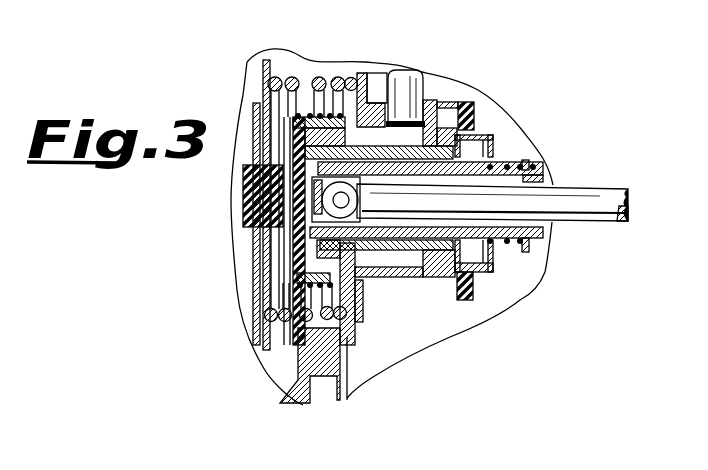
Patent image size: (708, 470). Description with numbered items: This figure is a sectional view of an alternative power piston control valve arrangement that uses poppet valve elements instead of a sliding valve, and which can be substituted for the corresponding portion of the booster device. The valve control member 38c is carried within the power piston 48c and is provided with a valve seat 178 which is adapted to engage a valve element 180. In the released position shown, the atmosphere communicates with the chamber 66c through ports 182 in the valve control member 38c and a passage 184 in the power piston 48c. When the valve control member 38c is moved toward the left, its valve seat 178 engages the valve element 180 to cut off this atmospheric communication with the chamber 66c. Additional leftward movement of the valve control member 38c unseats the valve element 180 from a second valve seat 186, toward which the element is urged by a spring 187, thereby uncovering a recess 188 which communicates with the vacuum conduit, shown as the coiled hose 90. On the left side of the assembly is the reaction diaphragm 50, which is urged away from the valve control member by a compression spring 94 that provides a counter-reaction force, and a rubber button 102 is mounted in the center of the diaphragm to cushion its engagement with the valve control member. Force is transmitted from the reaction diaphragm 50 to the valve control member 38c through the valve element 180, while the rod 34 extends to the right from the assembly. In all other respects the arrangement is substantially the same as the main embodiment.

The operating rod 34 is at (587, 198).
The valve control member 38c is at (440, 280).
The power piston 48c is at (313, 383).
The reaction diaphragm 50 is at (256, 281).
The chamber 66c is at (290, 327).
The coiled hose 90 is at (405, 95).
The compression spring 94 is at (347, 347).
The rubber button 102 is at (262, 195).
The valve seat 178 is at (365, 298).
The valve element 180 is at (283, 130).
The ports 182 is at (287, 238).
The passage 184 is at (373, 283).
The valve seat 186 is at (258, 313).
The spring 187 is at (283, 137).
The recess 188 is at (327, 117).